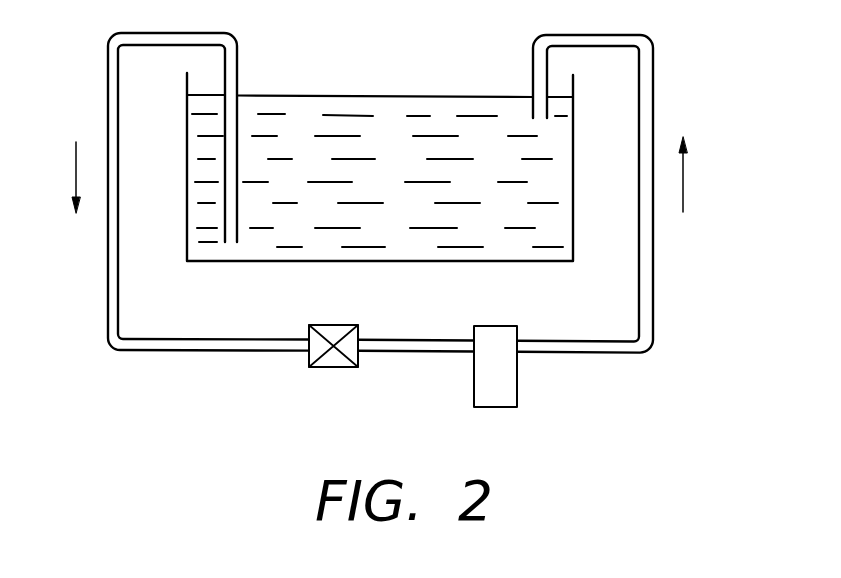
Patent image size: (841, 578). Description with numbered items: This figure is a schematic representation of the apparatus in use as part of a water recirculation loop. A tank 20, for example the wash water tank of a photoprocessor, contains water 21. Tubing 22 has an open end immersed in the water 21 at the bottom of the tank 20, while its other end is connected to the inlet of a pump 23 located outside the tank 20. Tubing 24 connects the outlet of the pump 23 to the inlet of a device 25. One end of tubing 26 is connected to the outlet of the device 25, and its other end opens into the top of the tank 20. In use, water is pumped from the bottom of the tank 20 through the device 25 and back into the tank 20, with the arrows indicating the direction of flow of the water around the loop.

The tank 20 is at (275, 261).
The water 21 is at (398, 100).
The tubing 22 is at (108, 88).
The pump 23 is at (318, 367).
The tubing 24 is at (428, 353).
The device 25 is at (517, 395).
The tubing 26 is at (655, 90).